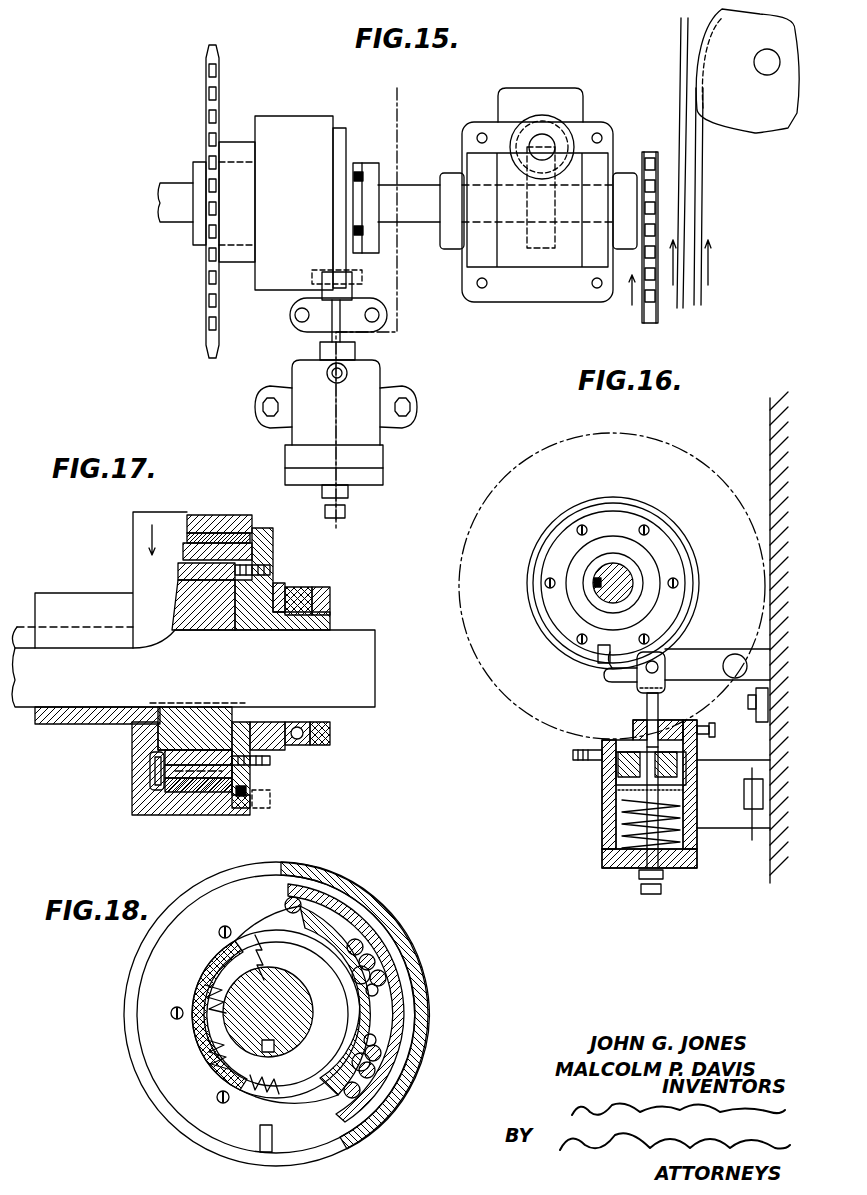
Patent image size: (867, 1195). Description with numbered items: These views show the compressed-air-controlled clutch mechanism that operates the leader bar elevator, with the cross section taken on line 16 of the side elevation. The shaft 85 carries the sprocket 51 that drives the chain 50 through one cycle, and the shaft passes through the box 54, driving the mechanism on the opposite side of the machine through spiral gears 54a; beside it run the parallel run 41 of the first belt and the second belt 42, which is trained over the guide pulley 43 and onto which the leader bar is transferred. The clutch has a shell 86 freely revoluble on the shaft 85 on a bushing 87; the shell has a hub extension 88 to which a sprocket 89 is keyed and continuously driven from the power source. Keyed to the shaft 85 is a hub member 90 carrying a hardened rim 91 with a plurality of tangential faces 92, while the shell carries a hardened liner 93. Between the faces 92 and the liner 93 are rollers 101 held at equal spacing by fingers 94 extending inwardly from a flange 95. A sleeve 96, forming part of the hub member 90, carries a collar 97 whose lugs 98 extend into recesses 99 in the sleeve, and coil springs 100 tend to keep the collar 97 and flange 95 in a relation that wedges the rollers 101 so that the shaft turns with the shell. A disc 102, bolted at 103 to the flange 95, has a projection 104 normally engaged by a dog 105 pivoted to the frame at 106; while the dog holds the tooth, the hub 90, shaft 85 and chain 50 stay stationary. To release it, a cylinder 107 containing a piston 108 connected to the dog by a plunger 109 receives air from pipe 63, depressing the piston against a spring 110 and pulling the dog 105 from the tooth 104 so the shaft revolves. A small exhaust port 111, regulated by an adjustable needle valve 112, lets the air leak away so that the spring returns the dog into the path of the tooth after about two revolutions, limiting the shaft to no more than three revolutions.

In FIG. 15, the section line 16— 16 is at (400, 88).
In FIG. 15, the parallel run of belt 41 is at (681, 73).
In FIG. 15, the second belt 42 is at (703, 191).
In FIG. 15, the guide pulley 43 is at (762, 120).
In FIG. 15, the chain 50 is at (645, 323).
In FIG. 15, the sprocket 51 is at (648, 152).
In FIG. 15, the box 54 is at (522, 262).
In FIG. 15, the spiral gears 54a is at (540, 175).
In FIG. 15, the pipe 63 is at (327, 373).
In FIG. 16, the pipe 63 is at (573, 755).
In FIG. 15, the shaft 85 is at (401, 222).
In FIG. 17, the shaft 85 is at (360, 660).
In FIG. 15, the shell 86 is at (305, 116).
In FIG. 17, the shell 86 is at (200, 515).
In FIG. 16, the shell 86 is at (548, 521).
In FIG. 18, the shell 86 is at (416, 1056).
In FIG. 17, the bushing 87 is at (40, 707).
In FIG. 15, the hub extension 88 is at (201, 160).
In FIG. 17, the hub extension 88 is at (58, 593).
In FIG. 15, the sprocket 89 is at (205, 297).
In FIG. 16, the sprocket 89 is at (550, 444).
In FIG. 17, the hub member 90 is at (168, 744).
In FIG. 18, the hub member 90 is at (340, 1110).
In FIG. 17, the hardened rim 91 is at (150, 778).
In FIG. 18, the hardened rim 91 is at (395, 990).
In FIG. 18, the tangential faces 92 is at (406, 1005).
In FIG. 17, the hardened liner 93 is at (222, 533).
In FIG. 18, the hardened liner 93 is at (340, 910).
In FIG. 17, the fingers 94 is at (242, 543).
In FIG. 18, the fingers 94 is at (372, 950).
In FIG. 17, the flange 95 is at (246, 793).
In FIG. 17, the sleeve 96 is at (281, 583).
In FIG. 15, the collar 97 is at (366, 253).
In FIG. 17, the collar 97 is at (330, 600).
In FIG. 16, the collar 97 is at (578, 612).
In FIG. 15, the lugs 98 is at (364, 192).
In FIG. 17, the lugs 98 is at (300, 587).
In FIG. 17, the recesses 99 is at (300, 746).
In FIG. 18, the recesses 99 is at (205, 1036).
In FIG. 15, the coil springs 100 is at (357, 172).
In FIG. 17, the coil springs 100 is at (300, 742).
In FIG. 18, the coil springs 100 is at (222, 1052).
In FIG. 17, the rollers 101 is at (176, 815).
In FIG. 18, the rollers 101 is at (385, 966).
In FIG. 15, the disc 102 is at (338, 128).
In FIG. 17, the disc 102 is at (265, 536).
In FIG. 16, the disc 102 is at (594, 508).
In FIG. 18, the disc 102 is at (250, 878).
In FIG. 17, the bolts 103 is at (268, 763).
In FIG. 16, the bolts 103 is at (577, 532).
In FIG. 18, the bolts 103 is at (170, 1013).
In FIG. 17, the projection (tooth) 104 is at (270, 801).
In FIG. 16, the projection (tooth) 104 is at (604, 664).
In FIG. 18, the projection (tooth) 104 is at (275, 1141).
In FIG. 16, the dog 105 is at (620, 682).
In FIG. 16, the pivot 106 is at (735, 654).
In FIG. 15, the cylinder 107 is at (375, 373).
In FIG. 16, the cylinder 107 is at (604, 826).
In FIG. 16, the piston 108 is at (610, 800).
In FIG. 16, the plunger 109 is at (658, 712).
In FIG. 16, the spring 110 is at (602, 856).
In FIG. 16, the exhaust port 111 is at (700, 754).
In FIG. 16, the needle valve 112 is at (715, 730).